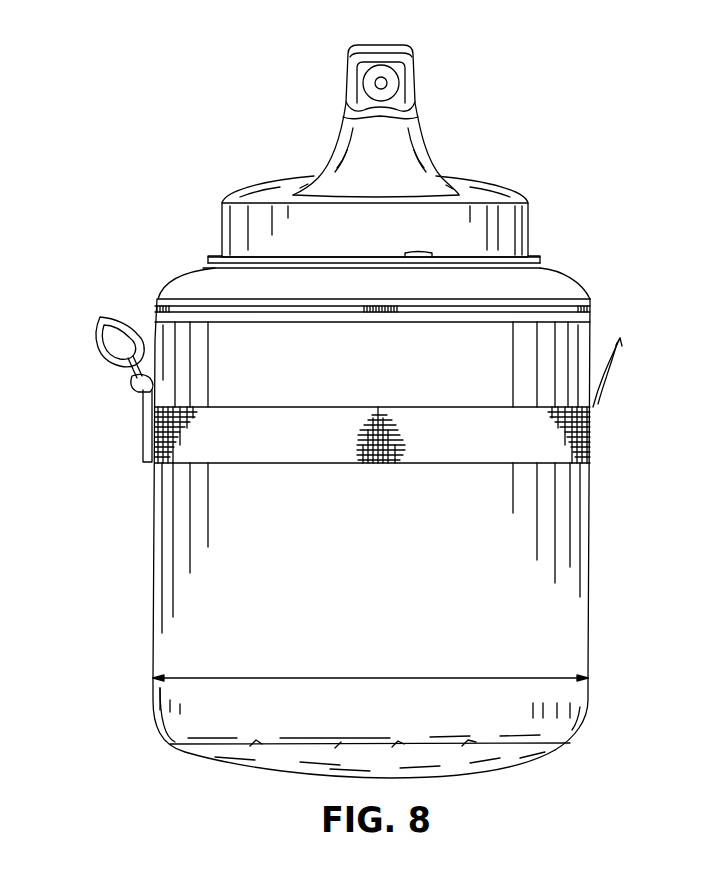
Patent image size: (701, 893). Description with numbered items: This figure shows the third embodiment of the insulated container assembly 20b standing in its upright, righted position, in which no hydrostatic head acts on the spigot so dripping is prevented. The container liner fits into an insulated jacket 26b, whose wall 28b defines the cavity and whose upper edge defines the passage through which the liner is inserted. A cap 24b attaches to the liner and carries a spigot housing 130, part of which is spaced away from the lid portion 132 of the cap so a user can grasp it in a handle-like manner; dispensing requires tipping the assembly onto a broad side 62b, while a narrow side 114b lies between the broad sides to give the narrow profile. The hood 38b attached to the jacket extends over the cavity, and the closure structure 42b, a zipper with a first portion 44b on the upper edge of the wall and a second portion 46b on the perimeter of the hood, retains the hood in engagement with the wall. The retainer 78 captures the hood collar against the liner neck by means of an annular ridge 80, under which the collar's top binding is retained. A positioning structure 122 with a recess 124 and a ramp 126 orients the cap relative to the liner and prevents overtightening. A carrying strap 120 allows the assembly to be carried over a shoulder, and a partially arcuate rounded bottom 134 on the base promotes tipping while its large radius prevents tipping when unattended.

The insulated container assembly 20b is at (182, 165).
The cap 24b is at (502, 178).
The insulated jacket 26b is at (146, 512).
The wall 28b is at (577, 637).
The hood 38b is at (622, 272).
The closure structure 42b is at (604, 312).
The first portion 44b is at (592, 321).
The second portion 46b is at (588, 300).
The broad side 62b is at (417, 679).
The retainer 78 is at (199, 255).
The annular ridge 80 is at (541, 262).
The narrow side 114b is at (590, 703).
The carrying strap 120 is at (100, 357).
The positioning structure 122 is at (440, 250).
The recess 124 is at (418, 258).
The ramp 126 is at (412, 248).
The spigot housing 130 is at (343, 57).
The lid portion 132 is at (273, 187).
The rounded bottom 134 is at (512, 766).